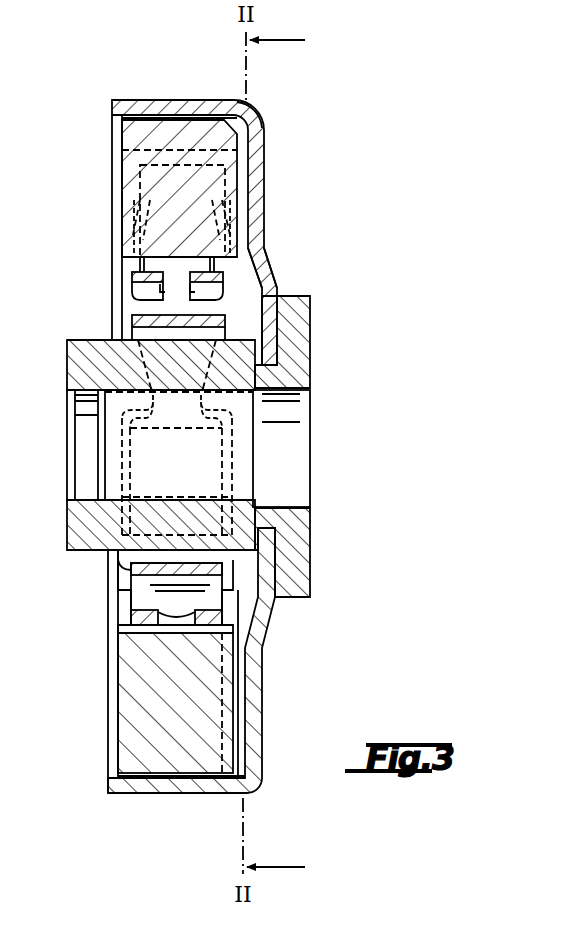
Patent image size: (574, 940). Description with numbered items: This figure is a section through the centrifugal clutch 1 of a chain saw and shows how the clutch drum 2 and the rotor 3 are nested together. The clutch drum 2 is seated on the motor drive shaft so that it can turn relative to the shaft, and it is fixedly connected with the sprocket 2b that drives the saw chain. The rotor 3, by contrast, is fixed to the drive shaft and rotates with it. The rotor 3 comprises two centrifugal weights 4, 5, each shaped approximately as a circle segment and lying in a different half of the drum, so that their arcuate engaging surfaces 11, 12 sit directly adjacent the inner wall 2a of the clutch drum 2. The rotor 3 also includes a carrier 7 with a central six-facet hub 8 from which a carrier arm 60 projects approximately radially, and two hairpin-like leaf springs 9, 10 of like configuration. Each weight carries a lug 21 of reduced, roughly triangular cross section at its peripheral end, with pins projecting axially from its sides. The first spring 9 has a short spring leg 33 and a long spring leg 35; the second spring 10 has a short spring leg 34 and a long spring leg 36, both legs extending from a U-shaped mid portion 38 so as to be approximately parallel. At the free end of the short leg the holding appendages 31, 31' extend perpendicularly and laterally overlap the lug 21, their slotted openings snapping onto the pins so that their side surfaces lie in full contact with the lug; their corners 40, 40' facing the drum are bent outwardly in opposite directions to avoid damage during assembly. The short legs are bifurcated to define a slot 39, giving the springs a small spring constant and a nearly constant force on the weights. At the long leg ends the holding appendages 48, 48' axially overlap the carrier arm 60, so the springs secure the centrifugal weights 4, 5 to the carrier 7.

The electromagnetic clutch 1 is at (95, 143).
The clutch drum 2 is at (263, 172).
The inner wall 2a is at (132, 130).
The sprocket 2b is at (296, 352).
The lug 21 is at (267, 136).
The engaging surface 11 is at (176, 118).
The rotor 3 is at (115, 270).
The centrifugal weight 4 is at (125, 183).
The corner 40 is at (236, 211).
The corner 40' is at (127, 220).
The holding appendage 31 is at (258, 220).
The holding appendage 31' is at (109, 220).
The short spring leg 33 is at (256, 252).
The long spring leg 35 is at (279, 330).
The slot 39 is at (175, 301).
The spring 9 is at (130, 321).
The carrier 7 is at (66, 358).
The hub 8 is at (66, 531).
The holding appendage 48 is at (225, 463).
The holding appendage 48' is at (120, 476).
The carrier arm 60 is at (180, 428).
The long spring leg 36 is at (272, 566).
The U-shaped mid portion 38 is at (210, 597).
The short spring leg 34 is at (215, 616).
The spring 10 is at (125, 617).
The centrifugal weight 5 is at (125, 722).
The engaging surface 12 is at (141, 793).